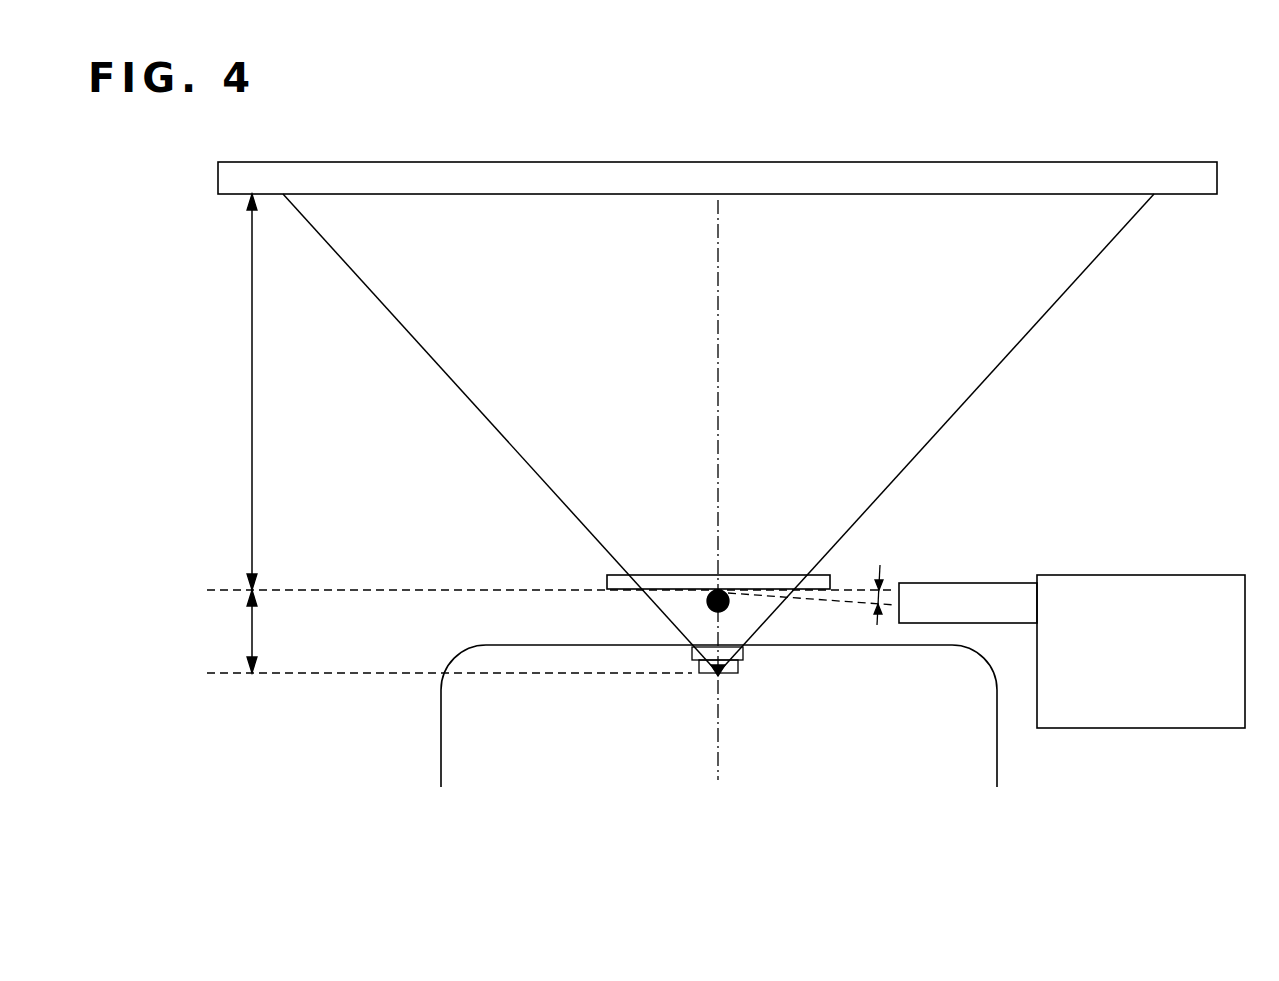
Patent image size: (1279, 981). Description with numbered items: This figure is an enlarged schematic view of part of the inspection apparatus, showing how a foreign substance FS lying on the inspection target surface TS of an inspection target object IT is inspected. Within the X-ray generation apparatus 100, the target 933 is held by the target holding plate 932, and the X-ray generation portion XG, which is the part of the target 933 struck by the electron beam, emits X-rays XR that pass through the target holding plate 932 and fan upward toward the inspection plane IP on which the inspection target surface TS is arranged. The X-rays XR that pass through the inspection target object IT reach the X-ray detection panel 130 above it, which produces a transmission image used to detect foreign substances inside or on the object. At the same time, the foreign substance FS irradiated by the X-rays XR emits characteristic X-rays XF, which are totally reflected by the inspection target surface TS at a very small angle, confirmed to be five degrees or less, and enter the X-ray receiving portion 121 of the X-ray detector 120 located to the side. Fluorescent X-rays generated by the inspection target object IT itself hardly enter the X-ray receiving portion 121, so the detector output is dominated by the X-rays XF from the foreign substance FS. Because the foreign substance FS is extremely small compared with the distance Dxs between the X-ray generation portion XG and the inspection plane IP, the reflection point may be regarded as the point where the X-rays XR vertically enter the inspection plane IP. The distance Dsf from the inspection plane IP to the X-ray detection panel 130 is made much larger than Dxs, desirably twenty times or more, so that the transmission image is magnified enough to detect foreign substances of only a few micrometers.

The X-ray detection panel 130 is at (977, 162).
The X-ray receiving portion 121 is at (935, 592).
The X-ray detector 120 is at (1187, 729).
The X-ray generation apparatus 100 is at (441, 755).
The target holding plate 932 is at (744, 656).
The target 933 is at (736, 668).
The X-rays XR is at (378, 215).
The inspection plane IP is at (495, 588).
The inspection target object IT is at (658, 575).
The foreign substance FS is at (712, 589).
The inspection target surface TS is at (618, 595).
The X-rays (characteristic X-rays) XF is at (850, 603).
The X-ray generation portion XG is at (712, 678).
The distance from the inspection plane to the X-ray detection panel Dsf is at (230, 392).
The distance between the X-ray generation portion and the inspection plane Dxs is at (228, 631).